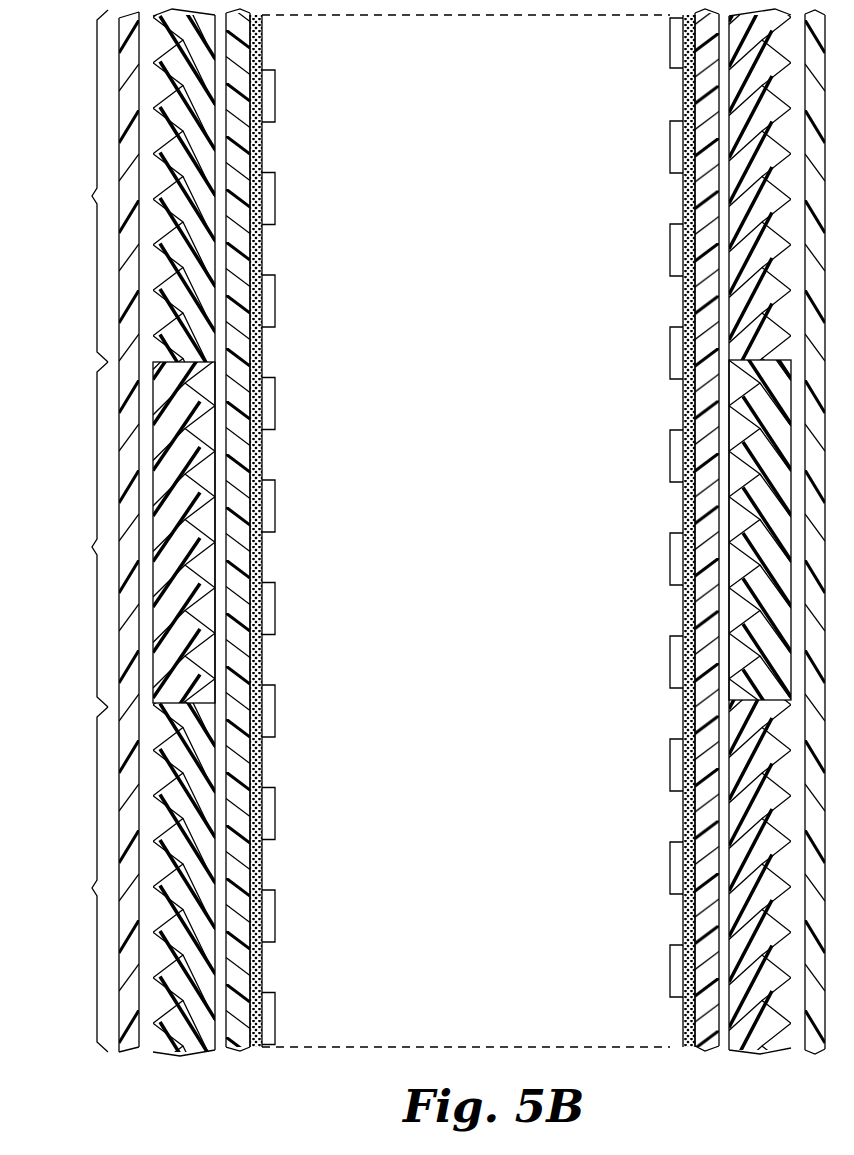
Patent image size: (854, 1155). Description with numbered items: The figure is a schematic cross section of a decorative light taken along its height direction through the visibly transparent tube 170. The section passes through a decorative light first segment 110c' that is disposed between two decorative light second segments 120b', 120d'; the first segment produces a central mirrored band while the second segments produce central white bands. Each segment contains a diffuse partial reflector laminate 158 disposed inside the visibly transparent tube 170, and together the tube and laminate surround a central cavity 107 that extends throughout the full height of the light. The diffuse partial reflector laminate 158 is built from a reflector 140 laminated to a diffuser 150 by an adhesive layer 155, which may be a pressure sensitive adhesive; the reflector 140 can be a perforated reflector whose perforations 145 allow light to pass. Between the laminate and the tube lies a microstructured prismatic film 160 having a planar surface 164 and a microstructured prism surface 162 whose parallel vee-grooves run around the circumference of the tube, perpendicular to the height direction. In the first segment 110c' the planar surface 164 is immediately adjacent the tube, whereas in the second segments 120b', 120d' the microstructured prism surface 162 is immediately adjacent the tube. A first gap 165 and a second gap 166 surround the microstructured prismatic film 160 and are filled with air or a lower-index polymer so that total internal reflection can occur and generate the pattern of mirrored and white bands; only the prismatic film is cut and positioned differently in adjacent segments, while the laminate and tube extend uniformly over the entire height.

The central cavity 107 is at (512, 535).
The reflector 140 is at (273, 405).
The perforations 145 is at (268, 355).
The diffuser 150 is at (240, 469).
The adhesive layer 155 is at (260, 248).
The diffuse partial reflector laminate 158 is at (280, 146).
The microstructured prismatic film 160 is at (200, 780).
The microstructured prism surface 162 is at (187, 680).
The planar surface 164 is at (215, 877).
The first gap 165 is at (158, 957).
The second gap 166 is at (210, 568).
The visibly transparent tube 170 is at (128, 1003).
The decorative light second segment 120b' is at (66, 186).
The decorative light first segment 110c' is at (66, 534).
The decorative light second segment 120d' is at (66, 879).